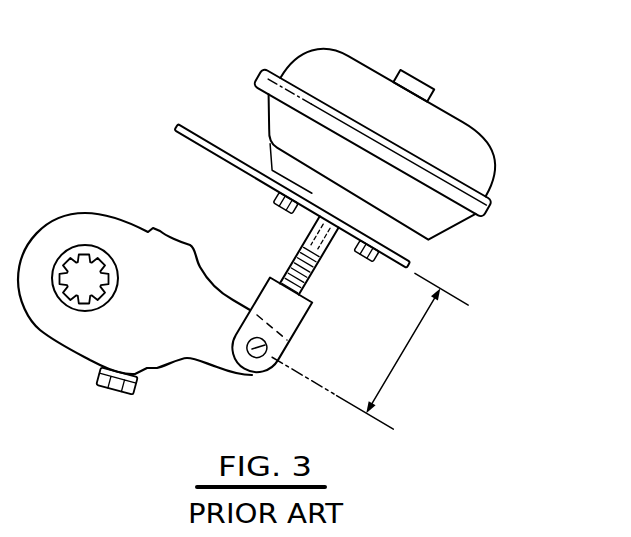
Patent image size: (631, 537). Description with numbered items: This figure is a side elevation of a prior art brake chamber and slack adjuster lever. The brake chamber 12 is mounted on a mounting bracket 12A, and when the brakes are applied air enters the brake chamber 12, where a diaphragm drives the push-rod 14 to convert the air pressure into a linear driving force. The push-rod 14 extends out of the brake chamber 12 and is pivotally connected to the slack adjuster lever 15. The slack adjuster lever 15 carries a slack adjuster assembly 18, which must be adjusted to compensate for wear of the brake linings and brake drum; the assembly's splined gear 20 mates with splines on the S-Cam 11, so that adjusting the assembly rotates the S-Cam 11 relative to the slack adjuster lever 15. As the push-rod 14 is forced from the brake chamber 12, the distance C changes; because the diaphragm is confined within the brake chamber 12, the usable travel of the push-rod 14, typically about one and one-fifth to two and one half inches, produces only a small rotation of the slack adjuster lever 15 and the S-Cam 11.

The brake chamber 12 is at (342, 48).
The mounting bracket 12A is at (217, 130).
The push-rod 14 is at (289, 254).
The slack adjuster lever 15 is at (213, 362).
The S-Cam 11 is at (96, 277).
The splined gear 20 is at (88, 295).
The slack adjuster assembly 18 is at (98, 400).
The distance C is at (408, 356).